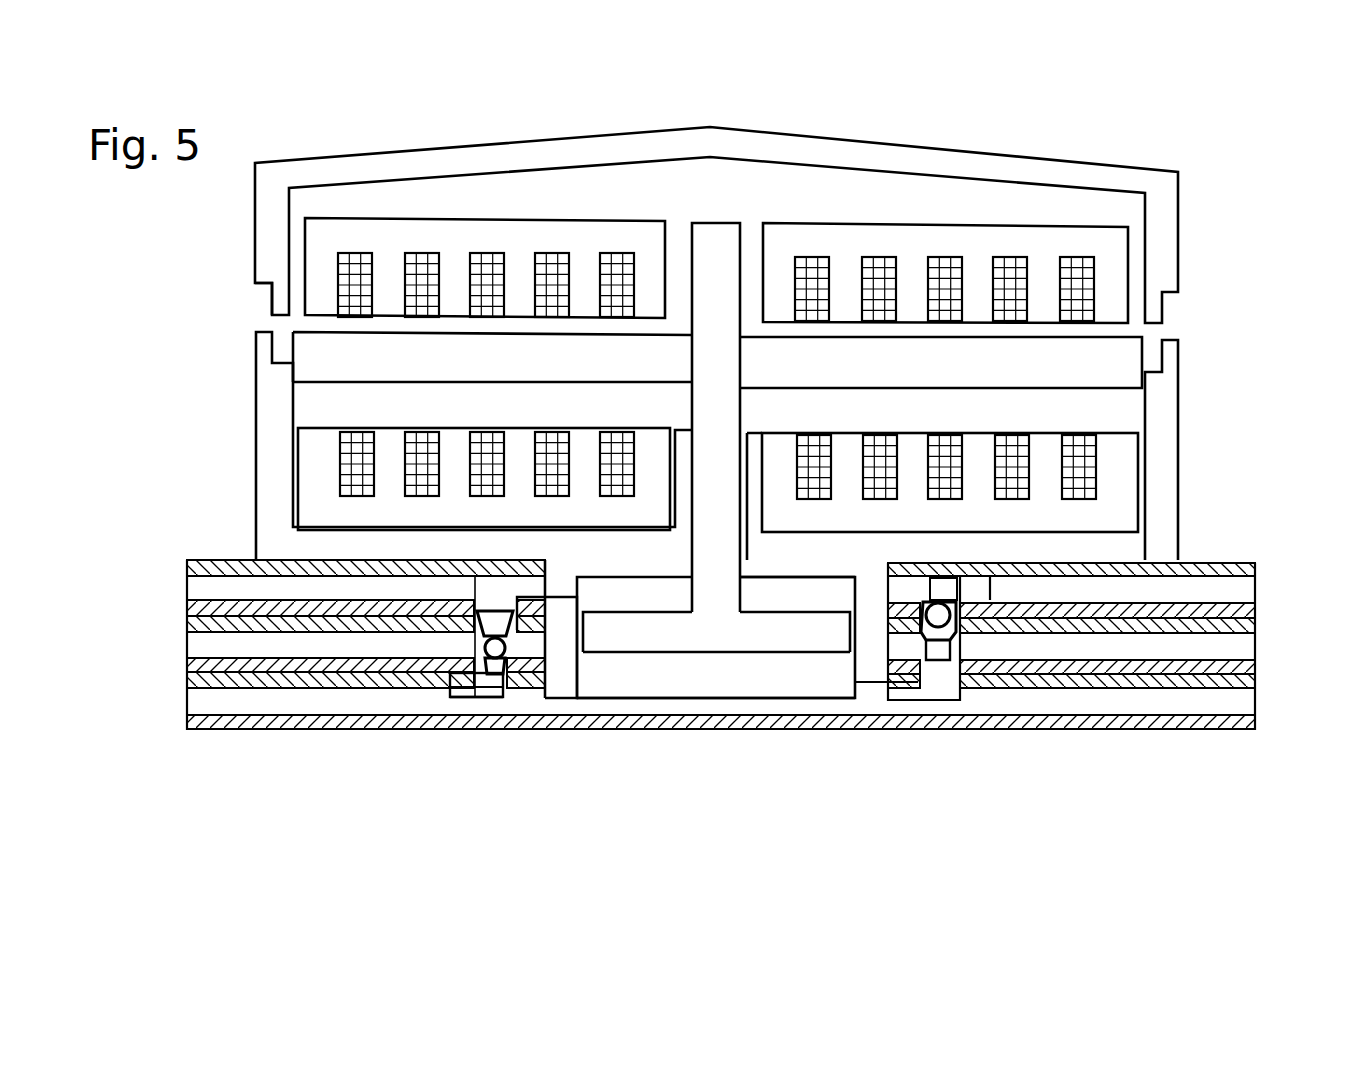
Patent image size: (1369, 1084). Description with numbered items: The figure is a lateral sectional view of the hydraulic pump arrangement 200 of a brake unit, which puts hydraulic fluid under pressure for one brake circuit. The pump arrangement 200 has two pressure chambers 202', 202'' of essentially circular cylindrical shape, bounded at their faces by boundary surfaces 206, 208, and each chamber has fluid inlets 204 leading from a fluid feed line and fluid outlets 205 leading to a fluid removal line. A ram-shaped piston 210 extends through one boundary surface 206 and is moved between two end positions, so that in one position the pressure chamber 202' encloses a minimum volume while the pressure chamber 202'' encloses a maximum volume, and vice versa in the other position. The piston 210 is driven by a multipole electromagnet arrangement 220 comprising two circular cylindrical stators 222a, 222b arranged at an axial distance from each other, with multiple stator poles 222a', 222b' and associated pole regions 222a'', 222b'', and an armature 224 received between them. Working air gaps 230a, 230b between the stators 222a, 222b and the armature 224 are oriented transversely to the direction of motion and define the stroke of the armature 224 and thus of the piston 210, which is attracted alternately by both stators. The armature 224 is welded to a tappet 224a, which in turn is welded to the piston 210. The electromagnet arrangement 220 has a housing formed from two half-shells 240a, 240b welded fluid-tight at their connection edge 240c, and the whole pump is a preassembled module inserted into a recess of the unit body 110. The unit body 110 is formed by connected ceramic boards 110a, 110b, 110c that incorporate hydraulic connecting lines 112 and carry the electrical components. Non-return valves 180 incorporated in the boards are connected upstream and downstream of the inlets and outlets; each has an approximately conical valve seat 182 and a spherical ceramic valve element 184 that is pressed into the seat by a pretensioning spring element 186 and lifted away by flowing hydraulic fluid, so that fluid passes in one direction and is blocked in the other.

The hydraulic pump arrangement 200 is at (862, 92).
The multipole electromagnet arrangement 220 is at (1228, 346).
The housing half-shell 240a is at (273, 198).
The housing half-shell 240b is at (273, 417).
The connection edge 240c is at (255, 283).
The armature 224 is at (1108, 368).
The tappet 224a is at (710, 455).
The working air gap 230a is at (837, 407).
The working air gap 230b is at (860, 367).
The stator 222b is at (788, 264).
The stator poles 222b' is at (1166, 295).
The upper component cell array 222b'' is at (816, 287).
The stator 222a is at (788, 480).
The stator poles 222a' is at (1165, 476).
The lower component cell array 222a'' is at (816, 465).
The unit body 110 is at (185, 562).
The ceramic board 110a is at (185, 578).
The ceramic board 110b is at (185, 603).
The ceramic board 110c is at (185, 703).
The pretensioning spring element 186 is at (478, 612).
The valve seat 182 is at (483, 628).
The non-return valve 180 is at (490, 650).
The valve element 184 is at (473, 660).
The hydraulic connecting line 112 is at (487, 698).
The fluid inlet 204 is at (562, 598).
The pressure chamber 202' is at (716, 677).
The pressure chamber 202'' is at (716, 729).
The piston 210 is at (768, 632).
The boundary surface 206 is at (828, 580).
The boundary surface 208 is at (813, 702).
The fluid outlet 205 is at (923, 703).